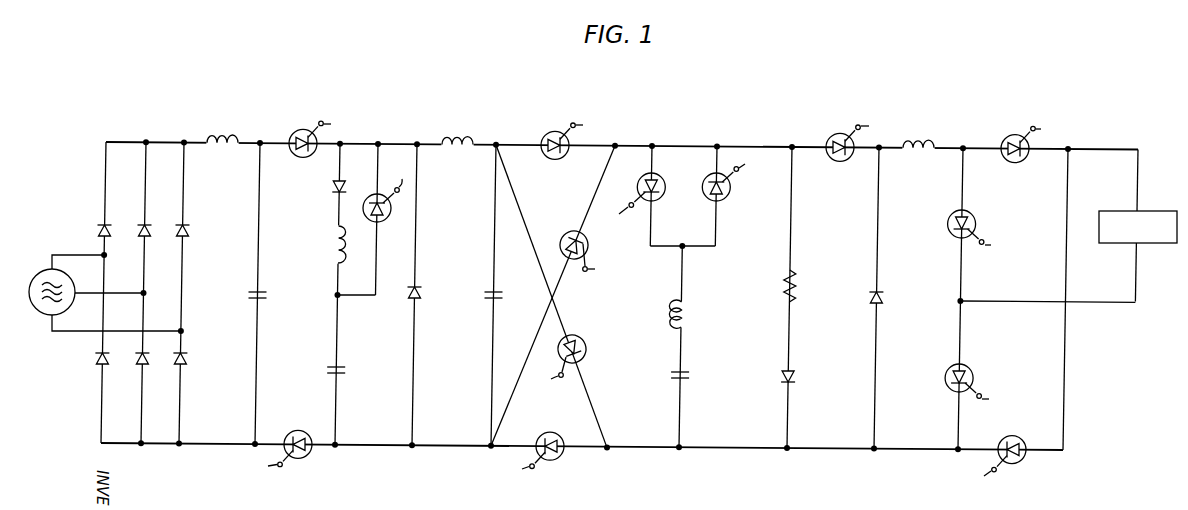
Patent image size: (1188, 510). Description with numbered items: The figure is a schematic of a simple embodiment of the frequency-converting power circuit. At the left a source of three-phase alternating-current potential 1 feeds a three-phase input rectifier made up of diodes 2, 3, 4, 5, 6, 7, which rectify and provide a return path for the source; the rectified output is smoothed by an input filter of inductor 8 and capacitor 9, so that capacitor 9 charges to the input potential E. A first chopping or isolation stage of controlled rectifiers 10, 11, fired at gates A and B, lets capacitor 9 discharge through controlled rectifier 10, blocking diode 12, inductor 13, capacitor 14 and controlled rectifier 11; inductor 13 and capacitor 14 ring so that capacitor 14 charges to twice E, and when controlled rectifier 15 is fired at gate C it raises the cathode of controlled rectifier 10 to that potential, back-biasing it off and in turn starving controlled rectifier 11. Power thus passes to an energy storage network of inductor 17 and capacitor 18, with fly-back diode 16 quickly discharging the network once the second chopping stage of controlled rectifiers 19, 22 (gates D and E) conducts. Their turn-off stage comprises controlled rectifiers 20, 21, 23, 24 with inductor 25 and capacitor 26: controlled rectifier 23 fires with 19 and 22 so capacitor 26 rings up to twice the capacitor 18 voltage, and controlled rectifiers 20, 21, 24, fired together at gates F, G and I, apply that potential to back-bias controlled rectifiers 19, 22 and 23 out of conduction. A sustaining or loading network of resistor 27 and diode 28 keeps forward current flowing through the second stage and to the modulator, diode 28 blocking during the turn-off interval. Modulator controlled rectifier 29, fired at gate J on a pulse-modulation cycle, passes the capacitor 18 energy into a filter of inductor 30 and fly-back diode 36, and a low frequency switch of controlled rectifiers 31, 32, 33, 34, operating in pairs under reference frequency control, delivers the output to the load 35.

The source of three-phase alternating-current potential 1 is at (36, 270).
The diode 2 is at (111, 231).
The diode 3 is at (109, 359).
The diode 4 is at (151, 231).
The diode 5 is at (149, 359).
The diode 6 is at (189, 231).
The diode 7 is at (187, 359).
The inductor 8 is at (222, 131).
The capacitor 9 is at (269, 296).
The controlled rectifier 10 is at (295, 134).
The controlled rectifier 11 is at (306, 457).
The diode 12 is at (333, 187).
The inductor 13 is at (333, 247).
The capacitor 14 is at (347, 371).
The controlled rectifier 15 is at (386, 220).
The fly-back diode 16 is at (421, 294).
The inductor 17 is at (464, 136).
The capacitor 18 is at (503, 296).
The controlled rectifier 19 is at (547, 135).
The controlled rectifier 20 is at (572, 233).
The controlled rectifier 21 is at (584, 342).
The controlled rectifier 22 is at (558, 459).
The controlled rectifier 23 is at (663, 198).
The controlled rectifier 24 is at (728, 198).
The inductor 25 is at (688, 316).
The capacitor 26 is at (691, 376).
The resistor 27 is at (797, 287).
The diode 28 is at (795, 378).
The controlled rectifier 29 is at (832, 136).
The inductor 30 is at (906, 137).
The controlled rectifier 31 is at (975, 218).
The controlled rectifier 32 is at (972, 372).
The controlled rectifier 33 is at (1007, 139).
The controlled rectifier 34 is at (1020, 462).
The load 35 is at (1156, 211).
The fly-back diode 36 is at (883, 299).